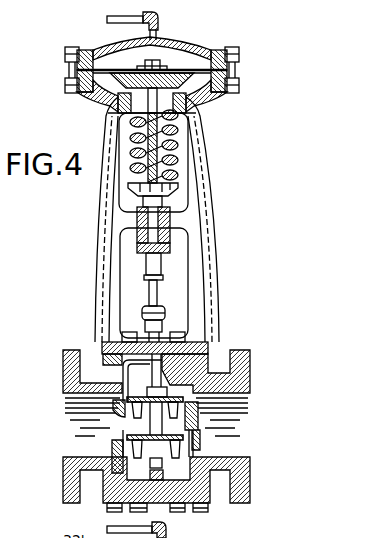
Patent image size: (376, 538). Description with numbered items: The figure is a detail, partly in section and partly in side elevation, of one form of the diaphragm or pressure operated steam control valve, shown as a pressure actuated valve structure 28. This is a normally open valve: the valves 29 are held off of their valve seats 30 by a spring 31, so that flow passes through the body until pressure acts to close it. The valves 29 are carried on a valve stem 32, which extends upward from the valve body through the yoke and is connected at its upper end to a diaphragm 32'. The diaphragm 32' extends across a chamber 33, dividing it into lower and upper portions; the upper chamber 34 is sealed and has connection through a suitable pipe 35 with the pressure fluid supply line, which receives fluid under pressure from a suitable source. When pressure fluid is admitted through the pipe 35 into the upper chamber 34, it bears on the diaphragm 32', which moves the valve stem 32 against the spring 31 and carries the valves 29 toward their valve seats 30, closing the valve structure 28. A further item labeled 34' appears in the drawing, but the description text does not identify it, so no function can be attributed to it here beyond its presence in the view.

The pressure actuated valve structure 28 is at (216, 261).
The valves 29 is at (204, 380).
The valve seats 30 is at (129, 407).
The spring 31 is at (175, 166).
The valve stem 32 is at (159, 215).
The diaphragm 32' is at (174, 91).
The chamber 33 is at (206, 110).
The upper chamber 34 is at (161, 60).
The handle 34' is at (159, 530).
The pipe 35 is at (159, 32).